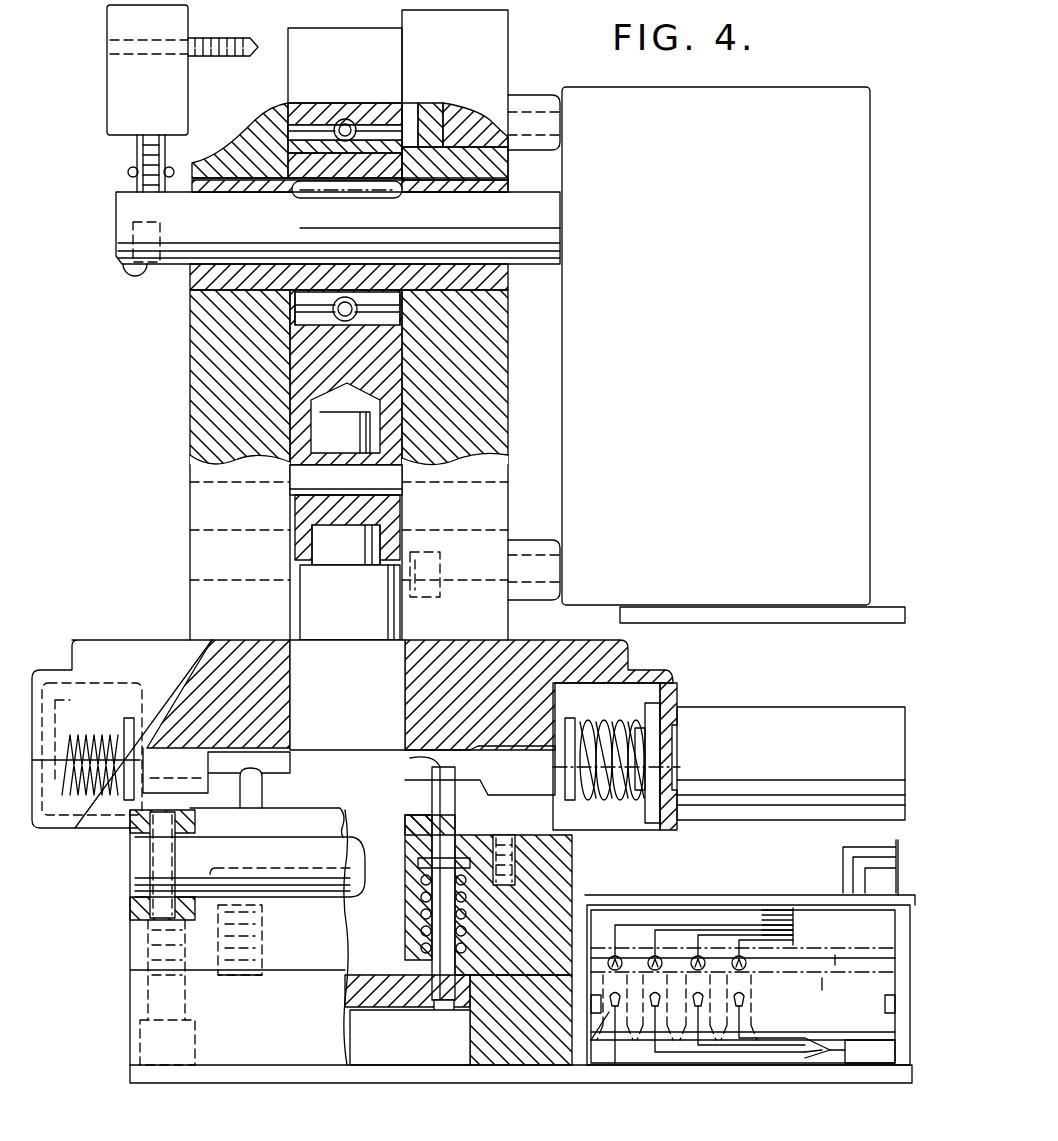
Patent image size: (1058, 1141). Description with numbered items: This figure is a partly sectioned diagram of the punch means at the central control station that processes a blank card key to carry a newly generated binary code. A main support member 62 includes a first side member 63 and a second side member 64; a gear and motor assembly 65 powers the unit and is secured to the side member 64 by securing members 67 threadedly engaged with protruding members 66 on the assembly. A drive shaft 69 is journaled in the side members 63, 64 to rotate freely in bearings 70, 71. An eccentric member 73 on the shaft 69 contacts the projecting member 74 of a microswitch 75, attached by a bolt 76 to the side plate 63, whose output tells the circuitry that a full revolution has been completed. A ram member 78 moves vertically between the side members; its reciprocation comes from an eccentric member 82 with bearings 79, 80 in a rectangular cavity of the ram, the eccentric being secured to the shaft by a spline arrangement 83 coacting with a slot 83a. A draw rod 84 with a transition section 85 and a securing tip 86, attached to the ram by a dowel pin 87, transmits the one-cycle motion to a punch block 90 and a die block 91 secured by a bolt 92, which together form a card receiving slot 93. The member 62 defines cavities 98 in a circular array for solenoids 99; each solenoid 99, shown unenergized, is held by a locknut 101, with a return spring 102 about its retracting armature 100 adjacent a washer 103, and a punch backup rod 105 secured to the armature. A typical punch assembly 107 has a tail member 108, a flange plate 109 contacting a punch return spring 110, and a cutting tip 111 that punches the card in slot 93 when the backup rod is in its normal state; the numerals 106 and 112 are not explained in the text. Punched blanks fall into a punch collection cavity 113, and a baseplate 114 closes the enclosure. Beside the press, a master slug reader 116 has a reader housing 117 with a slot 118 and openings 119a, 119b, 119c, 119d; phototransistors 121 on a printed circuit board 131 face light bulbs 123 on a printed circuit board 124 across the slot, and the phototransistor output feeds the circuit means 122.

The main support member 62 is at (84, 640).
The first side member 63 is at (188, 370).
The second side member 64 is at (508, 360).
The gear and motor assembly 65 is at (733, 355).
The protruding members 66 is at (518, 95).
The securing members 67 is at (455, 105).
The drive shaft 69 is at (338, 228).
The bearing 70 is at (508, 188).
The bearing 71 is at (182, 267).
The eccentric member 73 is at (133, 267).
The projecting member 74 is at (135, 154).
The microswitch 75 is at (147, 70).
The bolt 76 is at (105, 50).
The ram member 78 is at (398, 237).
The bearing 79 is at (404, 103).
The bearing 80 is at (300, 325).
The eccentric member 82 is at (370, 192).
The spline arrangement 83 is at (312, 198).
The slot 83a is at (292, 190).
The draw rod 84 is at (347, 695).
The transition section 85 is at (350, 602).
The securing tip 86 is at (345, 418).
The dowel pin 87 is at (346, 480).
The punch block 90 is at (130, 936).
The die block 91 is at (130, 1040).
The bolt 92 is at (160, 1070).
The card receiving slot 93 is at (260, 978).
The cavities 98 is at (76, 810).
The solenoid 99 is at (791, 763).
The retracting armature 100 is at (604, 730).
The locknut 101 is at (46, 690).
The return spring 102 is at (596, 800).
The washer 103 is at (572, 718).
The punch backup rod 105 is at (480, 770).
The guide block 106 is at (420, 852).
The punch assembly 107 is at (422, 795).
The tail member 108 is at (265, 788).
The flange plate 109 is at (420, 890).
The punch return spring 110 is at (422, 918).
The cutting tip 111 is at (442, 1012).
The ledge 112 is at (290, 760).
The punch collection cavity 113 is at (428, 1045).
The baseplate 114 is at (370, 1075).
The master slug reader 116 is at (798, 1086).
The reader housing 117 is at (655, 895).
The slot 118 is at (822, 982).
The opening 119a is at (622, 1010).
The opening 119b is at (650, 1010).
The opening 119c is at (718, 968).
The opening 119d is at (752, 981).
The phototransistors 121 is at (650, 960).
The circuit means 122 is at (815, 926).
The light bulbs 123 is at (608, 1008).
The printed circuit board 124 is at (781, 1006).
The printed circuit board 131 is at (866, 962).